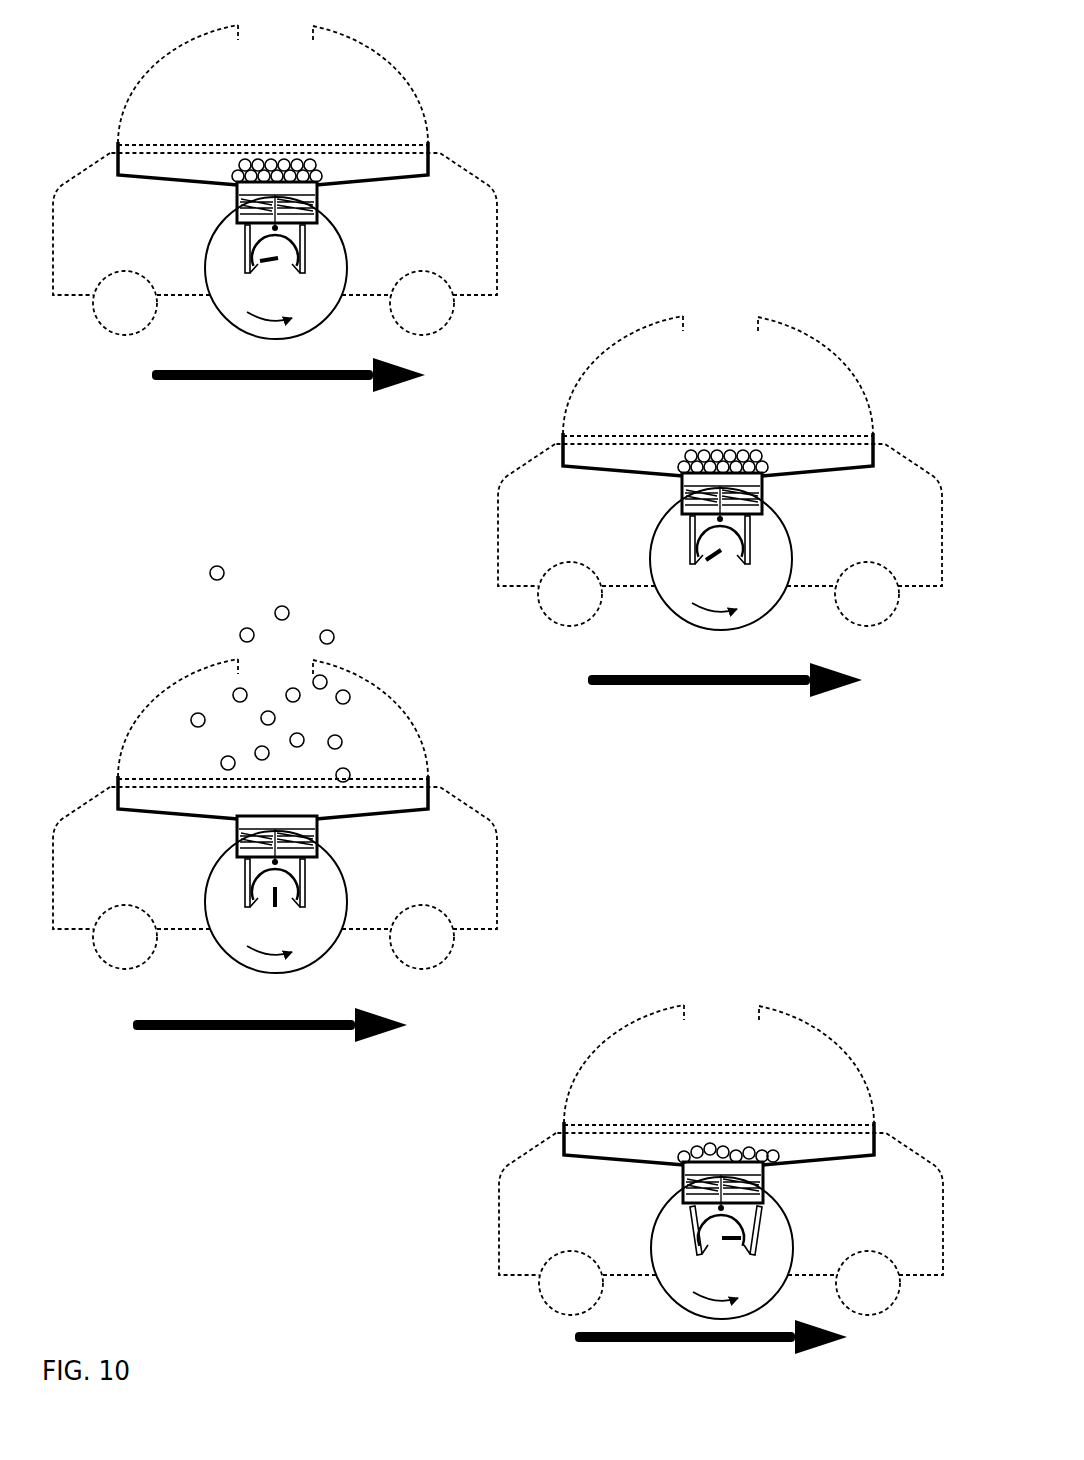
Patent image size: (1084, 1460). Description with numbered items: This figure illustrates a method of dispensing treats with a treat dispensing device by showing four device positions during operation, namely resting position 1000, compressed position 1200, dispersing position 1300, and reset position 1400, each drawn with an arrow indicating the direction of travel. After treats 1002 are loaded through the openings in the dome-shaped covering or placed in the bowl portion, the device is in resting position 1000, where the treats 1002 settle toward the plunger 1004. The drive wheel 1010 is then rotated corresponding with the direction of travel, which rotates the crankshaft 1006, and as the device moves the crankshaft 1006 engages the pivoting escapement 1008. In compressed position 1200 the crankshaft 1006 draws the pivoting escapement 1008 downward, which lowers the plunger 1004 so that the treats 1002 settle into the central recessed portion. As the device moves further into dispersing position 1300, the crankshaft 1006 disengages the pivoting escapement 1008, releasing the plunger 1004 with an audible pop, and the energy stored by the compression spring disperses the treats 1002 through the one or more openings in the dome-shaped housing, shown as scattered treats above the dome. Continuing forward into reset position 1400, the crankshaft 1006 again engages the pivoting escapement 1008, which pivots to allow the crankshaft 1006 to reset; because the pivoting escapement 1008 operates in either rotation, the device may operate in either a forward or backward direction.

The resting position 1000 is at (519, 66).
The compressed position 1200 is at (861, 303).
The dispersing position 1300 is at (137, 603).
The reset position 1400 is at (881, 995).
The treats 1002 is at (322, 170).
The plunger 1004 is at (303, 184).
The crankshaft 1006 is at (272, 261).
The pivoting escapement 1008 is at (246, 247).
The drive wheel 1010 is at (206, 278).